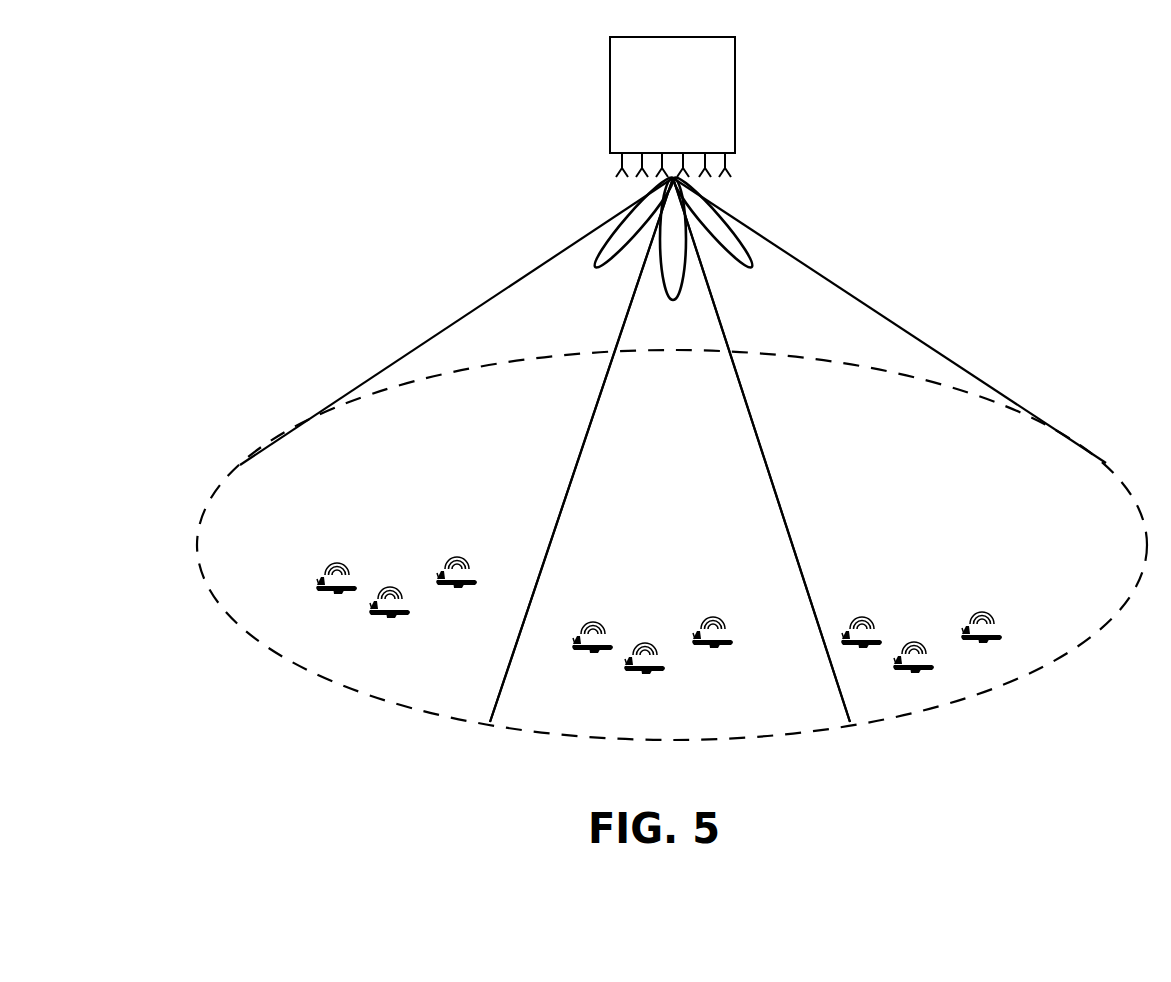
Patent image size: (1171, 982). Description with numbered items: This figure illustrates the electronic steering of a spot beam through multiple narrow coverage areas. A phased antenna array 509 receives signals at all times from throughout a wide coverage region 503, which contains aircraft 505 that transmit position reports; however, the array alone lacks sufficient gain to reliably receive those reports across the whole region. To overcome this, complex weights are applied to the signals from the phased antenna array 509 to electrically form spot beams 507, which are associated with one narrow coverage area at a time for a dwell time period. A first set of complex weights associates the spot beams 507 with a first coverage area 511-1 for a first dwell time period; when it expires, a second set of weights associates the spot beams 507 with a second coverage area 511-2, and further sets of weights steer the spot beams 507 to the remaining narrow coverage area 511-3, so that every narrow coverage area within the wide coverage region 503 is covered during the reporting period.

The wide coverage region 503 is at (1072, 650).
The aircraft 505 is at (242, 733).
The spot beams 507 is at (757, 233).
The phased antenna array 509 is at (695, 147).
The first coverage area 511-1 is at (526, 487).
The second coverage area 511-2 is at (646, 544).
The narrow coverage area 511-3 is at (819, 487).